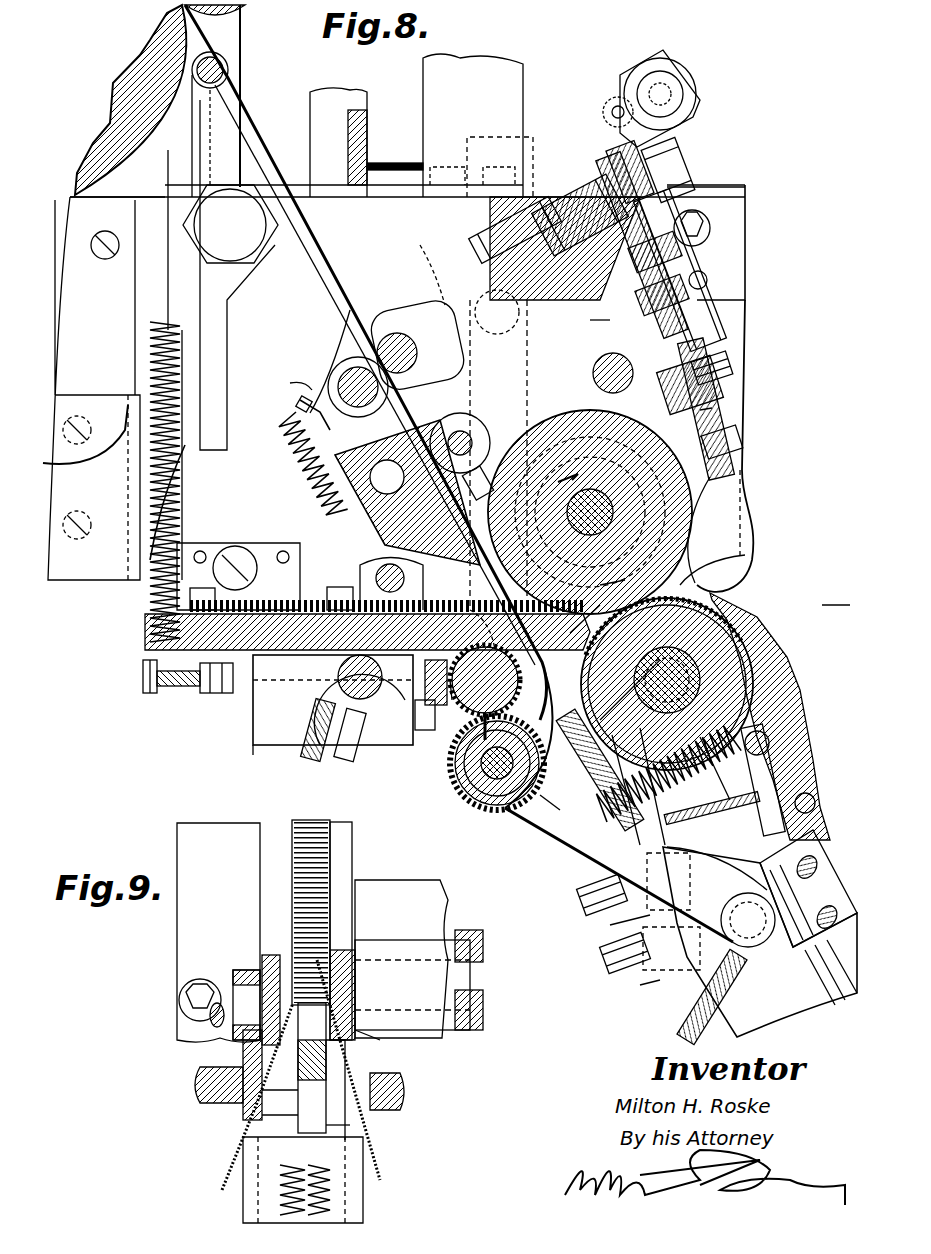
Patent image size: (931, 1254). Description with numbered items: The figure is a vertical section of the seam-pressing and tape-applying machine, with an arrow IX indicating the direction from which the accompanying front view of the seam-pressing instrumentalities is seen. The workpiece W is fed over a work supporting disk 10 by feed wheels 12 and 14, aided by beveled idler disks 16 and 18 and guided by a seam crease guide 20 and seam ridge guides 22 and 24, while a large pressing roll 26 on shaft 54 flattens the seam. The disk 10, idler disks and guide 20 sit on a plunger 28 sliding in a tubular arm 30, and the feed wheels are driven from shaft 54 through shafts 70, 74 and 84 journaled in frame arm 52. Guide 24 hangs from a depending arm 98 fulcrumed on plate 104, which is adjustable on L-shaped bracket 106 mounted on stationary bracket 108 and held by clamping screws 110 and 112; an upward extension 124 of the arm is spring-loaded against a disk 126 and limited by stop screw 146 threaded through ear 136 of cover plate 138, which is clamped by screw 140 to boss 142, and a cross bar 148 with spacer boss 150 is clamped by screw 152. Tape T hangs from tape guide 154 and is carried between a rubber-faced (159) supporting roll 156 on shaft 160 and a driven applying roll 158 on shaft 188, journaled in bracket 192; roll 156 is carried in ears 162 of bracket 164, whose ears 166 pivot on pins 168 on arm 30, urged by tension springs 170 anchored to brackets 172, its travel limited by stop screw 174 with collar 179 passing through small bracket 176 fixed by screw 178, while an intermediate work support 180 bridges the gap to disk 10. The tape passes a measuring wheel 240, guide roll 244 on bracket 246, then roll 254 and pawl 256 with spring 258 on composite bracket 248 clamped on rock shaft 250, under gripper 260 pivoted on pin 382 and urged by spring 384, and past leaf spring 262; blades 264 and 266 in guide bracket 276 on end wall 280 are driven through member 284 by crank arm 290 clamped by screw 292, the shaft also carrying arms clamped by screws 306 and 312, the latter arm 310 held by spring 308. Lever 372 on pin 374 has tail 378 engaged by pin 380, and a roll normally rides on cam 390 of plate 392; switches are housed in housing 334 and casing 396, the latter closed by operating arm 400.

In FIG. 8, the work supporting disk 10 is at (745, 640).
In FIG. 9, the work supporting disk 10 is at (360, 1118).
In FIG. 9, the feed wheel 12 is at (262, 1020).
In FIG. 8, the feed wheel 14 is at (750, 556).
In FIG. 9, the feed wheel 14 is at (385, 1040).
In FIG. 9, the idler disk 16 is at (258, 1108).
In FIG. 9, the idler disk 18 is at (360, 1140).
In FIG. 8, the seam crease guide 20 is at (755, 615).
In FIG. 9, the seam crease guide 20 is at (300, 1100).
In FIG. 9, the seam ridge guide 22 is at (275, 872).
In FIG. 8, the seam ridge guide 24 is at (745, 532).
In FIG. 9, the seam ridge guide 24 is at (345, 878).
In FIG. 8, the rubbing or pressing roll 26 is at (585, 420).
In FIG. 9, the rubbing or pressing roll 26 is at (300, 825).
In FIG. 8, the plunger 28 is at (700, 980).
In FIG. 8, the tubular arm 30 is at (708, 1015).
In FIG. 9, the frame arm 52 is at (455, 1020).
In FIG. 8, the seam pressing roll shaft 54 is at (620, 512).
In FIG. 9, the seam pressing roll shaft 54 is at (465, 965).
In FIG. 9, the shaft 70 is at (380, 1027).
In FIG. 9, the short shaft 74 is at (200, 1022).
In FIG. 8, the long shaft 84 is at (593, 373).
In FIG. 8, the depending arm 98 is at (715, 412).
In FIG. 8, the plate 104 is at (540, 292).
In FIG. 8, the L-shaped bracket 106 is at (470, 240).
In FIG. 8, the stationary bracket 108 is at (735, 217).
In FIG. 8, the clamping screw 110 is at (530, 185).
In FIG. 8, the clamping screw 112 is at (600, 322).
In FIG. 8, the upward extension 124 is at (628, 76).
In FIG. 8, the disk 126 is at (680, 94).
In FIG. 8, the ear 136 is at (690, 68).
In FIG. 8, the cover plate 138 is at (740, 335).
In FIG. 8, the screw 140 is at (680, 160).
In FIG. 8, the boss 142 is at (670, 205).
In FIG. 8, the stop screw 146 is at (603, 105).
In FIG. 8, the cross bar 148 is at (660, 385).
In FIG. 8, the spacer boss 150 is at (720, 400).
In FIG. 8, the screw 152 is at (722, 372).
In FIG. 8, the tape presenter or guide 154 is at (495, 585).
In FIG. 8, the supporting roll 156 is at (470, 778).
In FIG. 8, the applying roll 158 is at (470, 710).
In FIG. 9, the applying roll 158 is at (250, 1060).
In FIG. 8, the rubber facing 159 is at (490, 800).
In FIG. 8, the shaft 160 is at (485, 790).
In FIG. 8, the ears 162 is at (545, 803).
In FIG. 8, the bracket 164 is at (600, 775).
In FIG. 8, the ears 166 is at (710, 892).
In FIG. 8, the pivot pins 168 is at (752, 947).
In FIG. 8, the tension springs 170 is at (770, 760).
In FIG. 9, the tension springs 170 is at (280, 1185).
In FIG. 8, the brackets 172 is at (790, 790).
In FIG. 9, the brackets 172 is at (250, 1200).
In FIG. 8, the stop screw 174 is at (585, 898).
In FIG. 8, the small bracket 176 is at (655, 980).
In FIG. 8, the screw 178 is at (605, 953).
In FIG. 8, the collar 179 is at (600, 920).
In FIG. 8, the intermediate work support 180 is at (577, 725).
In FIG. 8, the shaft 188 is at (475, 757).
In FIG. 9, the shaft 188 is at (210, 1082).
In FIG. 8, the bracket 192 is at (265, 747).
In FIG. 8, the measuring wheel 240 is at (128, 70).
In FIG. 8, the guide roll 244 is at (218, 62).
In FIG. 8, the bracket 246 is at (205, 107).
In FIG. 8, the composite bracket 248 is at (340, 425).
In FIG. 9, the composite bracket 248 is at (180, 930).
In FIG. 8, the rock shaft 250 is at (320, 700).
In FIG. 8, the roll 254 is at (378, 312).
In FIG. 8, the pawl 256 is at (400, 332).
In FIG. 8, the spring 258 is at (305, 465).
In FIG. 8, the gripper 260 is at (465, 414).
In FIG. 8, the leaf spring 262 is at (600, 560).
In FIG. 8, the blade 264 is at (615, 580).
In FIG. 8, the blade 266 is at (488, 604).
In FIG. 8, the guide bracket 276 is at (258, 545).
In FIG. 8, the end wall 280 is at (380, 195).
In FIG. 8, the member 284 is at (362, 575).
In FIG. 8, the crank arm 290 is at (345, 748).
In FIG. 8, the clamping screw 292 is at (310, 760).
In FIG. 8, the clamping screw 306 is at (340, 757).
In FIG. 8, the tension spring 308 is at (182, 500).
In FIG. 8, the crank arm 310 is at (200, 690).
In FIG. 8, the screw 312 is at (405, 730).
In FIG. 8, the housing 334 is at (72, 195).
In FIG. 8, the lever 372 is at (237, 140).
In FIG. 8, the pin 374 is at (255, 235).
In FIG. 8, the tail 378 is at (230, 442).
In FIG. 8, the pin 380 is at (305, 413).
In FIG. 8, the pin 382 is at (472, 422).
In FIG. 8, the compression spring 384 is at (345, 405).
In FIG. 8, the cam surface 390 is at (290, 383).
In FIG. 8, the plate 392 is at (445, 305).
In FIG. 8, the casing 396 is at (90, 570).
In FIG. 8, the operating arm 400 is at (182, 462).
In FIG. 8, the tape T is at (320, 245).
In FIG. 9, the workpiece W is at (380, 1165).
In FIG. 8, the arrow IX is at (784, 624).